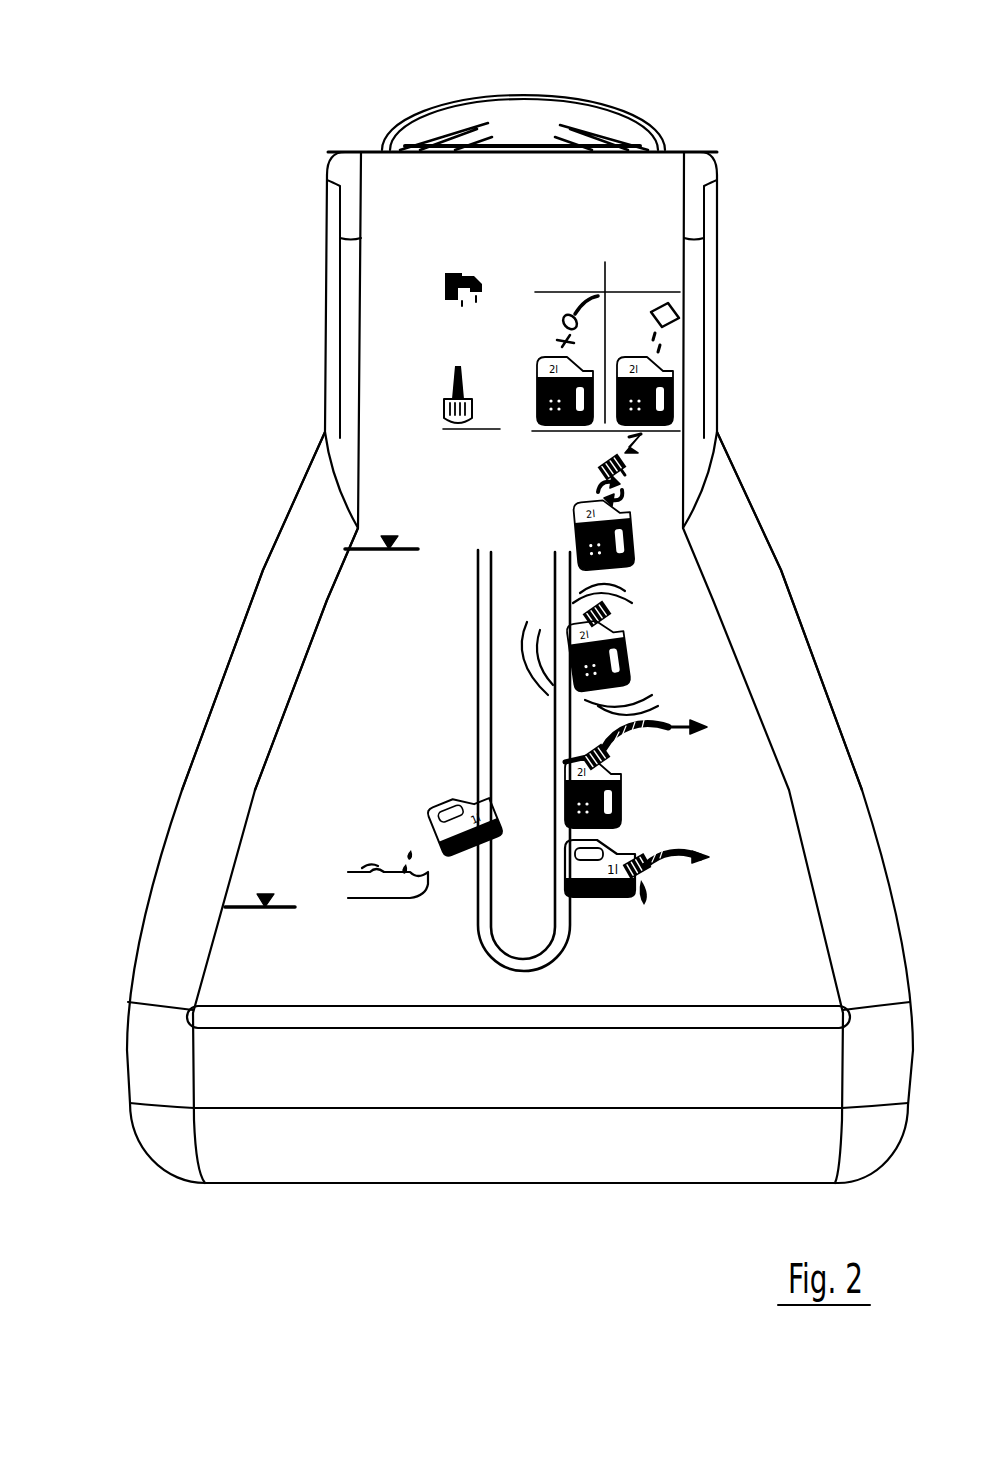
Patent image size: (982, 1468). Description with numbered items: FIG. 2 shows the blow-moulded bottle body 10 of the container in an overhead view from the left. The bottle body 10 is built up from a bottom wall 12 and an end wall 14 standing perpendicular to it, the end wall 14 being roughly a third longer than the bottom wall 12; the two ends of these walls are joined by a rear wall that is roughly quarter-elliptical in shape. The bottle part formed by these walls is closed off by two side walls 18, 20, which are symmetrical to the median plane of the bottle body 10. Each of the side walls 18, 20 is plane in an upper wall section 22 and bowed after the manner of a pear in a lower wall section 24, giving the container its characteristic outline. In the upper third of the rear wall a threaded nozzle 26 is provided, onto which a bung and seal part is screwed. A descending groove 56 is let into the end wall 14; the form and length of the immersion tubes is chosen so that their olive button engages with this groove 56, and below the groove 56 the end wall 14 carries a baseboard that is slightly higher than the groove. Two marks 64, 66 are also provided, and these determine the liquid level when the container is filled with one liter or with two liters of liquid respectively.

The bottle body 10 is at (793, 567).
The bottom wall 12 is at (455, 1183).
The end wall 14 is at (712, 972).
The side wall 18 is at (275, 672).
The side wall 20 is at (778, 667).
The upper wall section 22 is at (326, 323).
The lower wall section 24 is at (237, 754).
The threaded nozzle 26 is at (527, 125).
The descending groove 56 is at (525, 932).
The mark 64 is at (225, 907).
The mark 66 is at (347, 551).